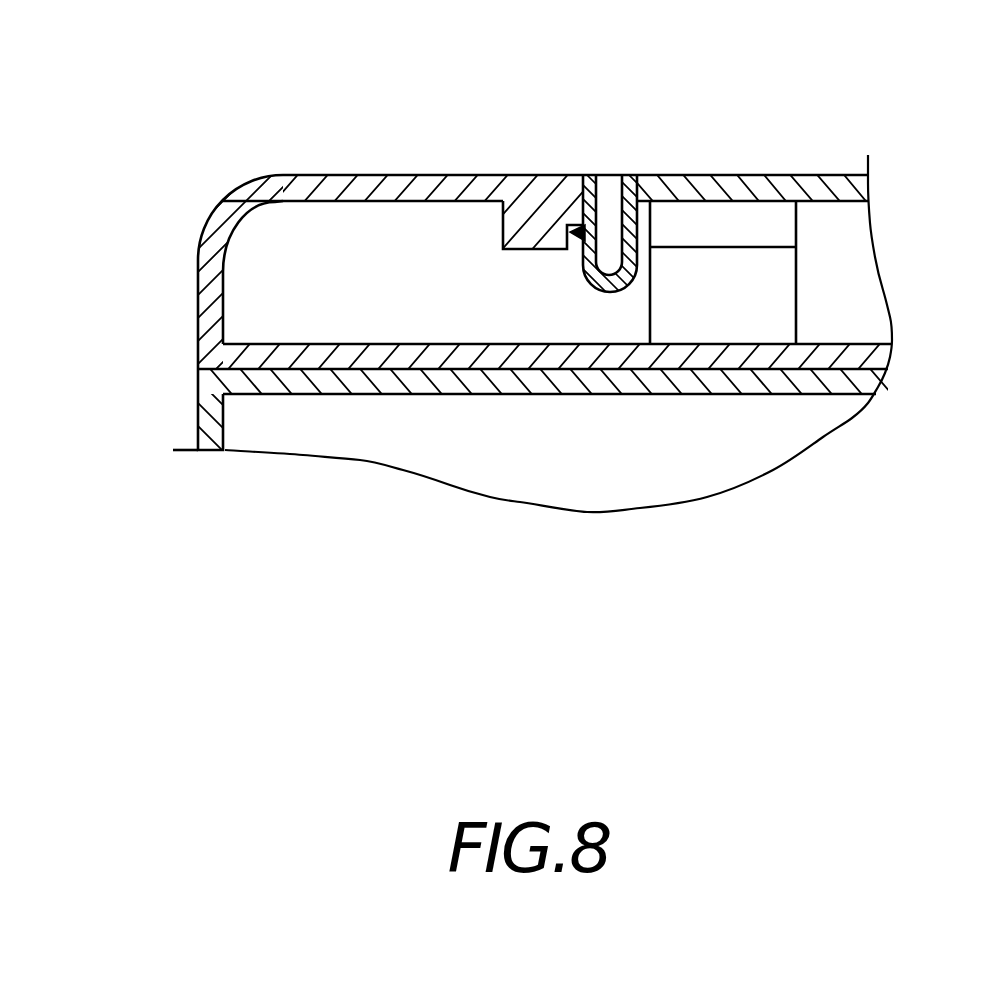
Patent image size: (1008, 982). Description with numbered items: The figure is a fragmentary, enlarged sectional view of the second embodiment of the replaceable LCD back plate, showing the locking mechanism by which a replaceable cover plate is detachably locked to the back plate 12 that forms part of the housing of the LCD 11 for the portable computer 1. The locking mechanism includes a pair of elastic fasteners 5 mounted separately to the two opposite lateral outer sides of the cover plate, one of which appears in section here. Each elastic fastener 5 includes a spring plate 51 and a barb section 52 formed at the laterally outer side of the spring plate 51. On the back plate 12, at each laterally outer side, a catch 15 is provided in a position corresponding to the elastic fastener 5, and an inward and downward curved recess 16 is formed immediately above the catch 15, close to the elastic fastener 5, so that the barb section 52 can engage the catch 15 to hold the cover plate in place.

The portable computer 1 is at (213, 423).
The LCD 11 is at (268, 195).
The back plate 12 is at (360, 175).
The catch 15 is at (582, 182).
The inward and downward curved recess 16 is at (545, 183).
The elastic fastener 5 is at (558, 276).
The spring plate 51 is at (620, 182).
The barb section 52 is at (583, 240).